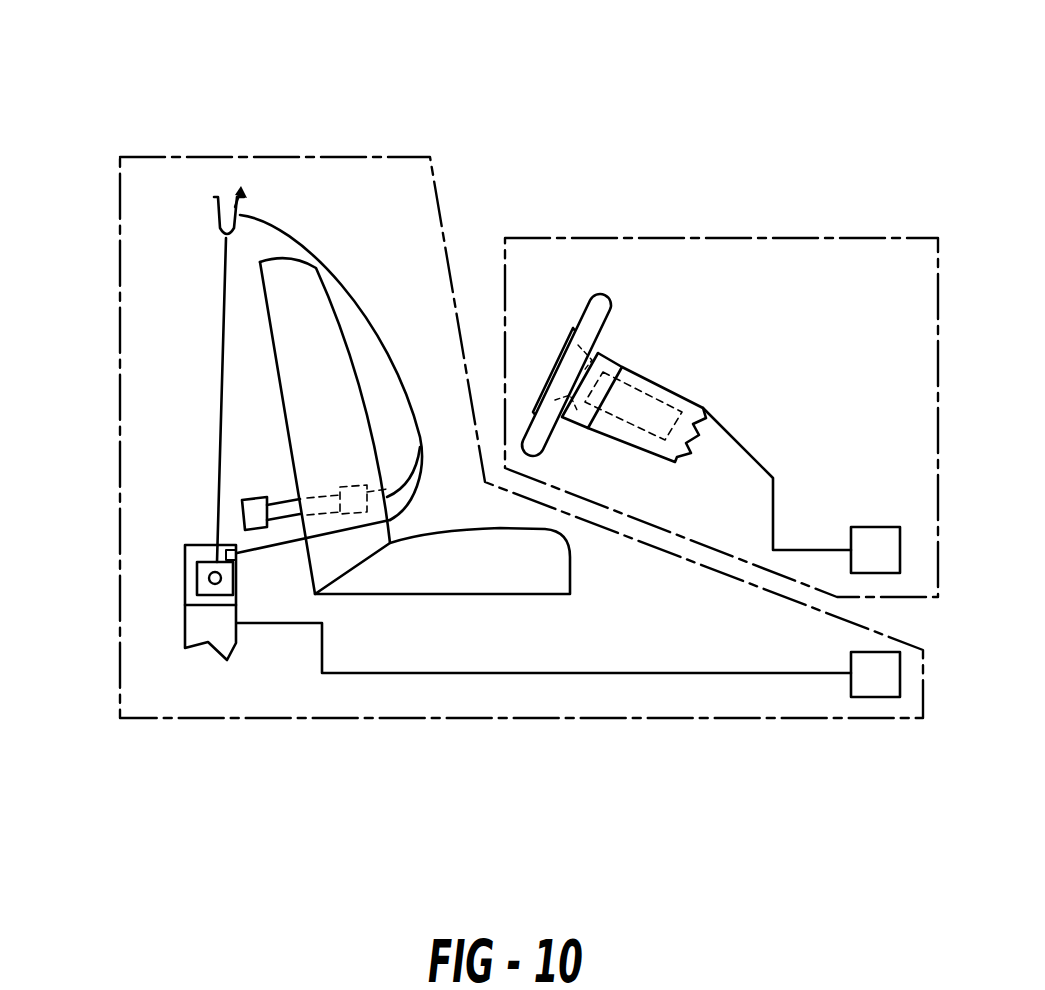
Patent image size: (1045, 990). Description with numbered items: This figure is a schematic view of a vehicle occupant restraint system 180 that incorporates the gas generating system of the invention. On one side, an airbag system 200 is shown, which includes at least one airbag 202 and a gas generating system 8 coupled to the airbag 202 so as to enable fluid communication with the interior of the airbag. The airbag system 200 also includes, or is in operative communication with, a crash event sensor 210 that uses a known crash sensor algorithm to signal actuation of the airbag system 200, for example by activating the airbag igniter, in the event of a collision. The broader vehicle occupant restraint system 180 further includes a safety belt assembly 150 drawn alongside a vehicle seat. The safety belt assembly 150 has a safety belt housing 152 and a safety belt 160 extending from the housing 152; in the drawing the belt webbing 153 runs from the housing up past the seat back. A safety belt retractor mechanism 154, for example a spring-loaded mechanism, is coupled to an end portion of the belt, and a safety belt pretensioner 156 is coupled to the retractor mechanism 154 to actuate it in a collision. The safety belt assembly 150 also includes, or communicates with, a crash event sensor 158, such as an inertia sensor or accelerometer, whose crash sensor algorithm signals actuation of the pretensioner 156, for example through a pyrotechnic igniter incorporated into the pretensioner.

The safety belt assembly 150 is at (277, 157).
The safety belt housing 152 is at (198, 592).
The seat belt webbing 153 is at (220, 365).
The safety belt retractor mechanism 154 is at (183, 545).
The safety belt pretensioner 156 is at (207, 630).
The crash event sensor 158 is at (873, 697).
The safety belt 160 is at (288, 230).
The vehicle occupant restraint system 180 is at (610, 142).
The airbag system 200 is at (867, 237).
The airbag 202 is at (580, 367).
The gas generating system 8 is at (642, 390).
The crash event sensor 210 is at (873, 527).